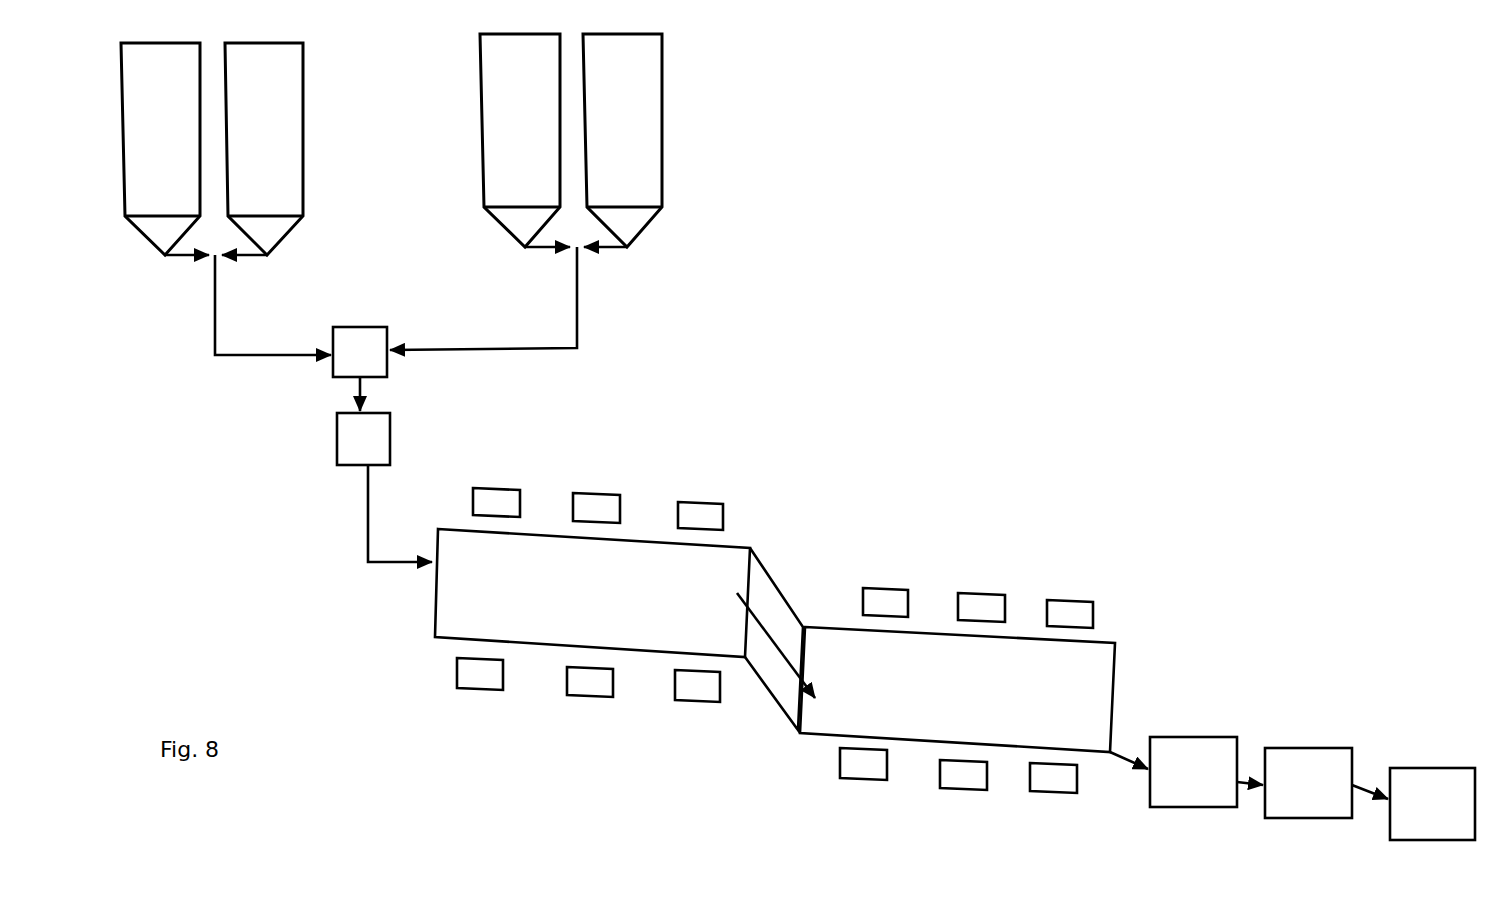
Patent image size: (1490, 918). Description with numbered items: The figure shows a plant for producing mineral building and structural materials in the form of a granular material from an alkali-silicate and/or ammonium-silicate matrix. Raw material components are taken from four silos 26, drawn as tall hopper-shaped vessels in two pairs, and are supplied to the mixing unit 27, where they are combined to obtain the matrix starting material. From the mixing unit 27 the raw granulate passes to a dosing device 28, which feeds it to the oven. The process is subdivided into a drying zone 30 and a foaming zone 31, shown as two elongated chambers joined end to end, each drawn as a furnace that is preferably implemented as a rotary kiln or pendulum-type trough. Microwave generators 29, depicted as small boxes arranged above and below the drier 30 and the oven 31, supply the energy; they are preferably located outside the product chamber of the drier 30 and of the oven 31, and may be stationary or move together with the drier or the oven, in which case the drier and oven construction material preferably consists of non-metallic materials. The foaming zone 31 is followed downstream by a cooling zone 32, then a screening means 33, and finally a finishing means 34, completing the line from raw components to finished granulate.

The silos 26 is at (391, 144).
The mixing unit 27 is at (396, 312).
The dosing device 28 is at (384, 469).
The microwave generators 29 is at (502, 496).
The drying zone 30 is at (625, 629).
The foaming zone 31 is at (957, 710).
The cooling zone 32 is at (1173, 772).
The screening means 33 is at (1294, 783).
The finishing means 34 is at (1413, 804).